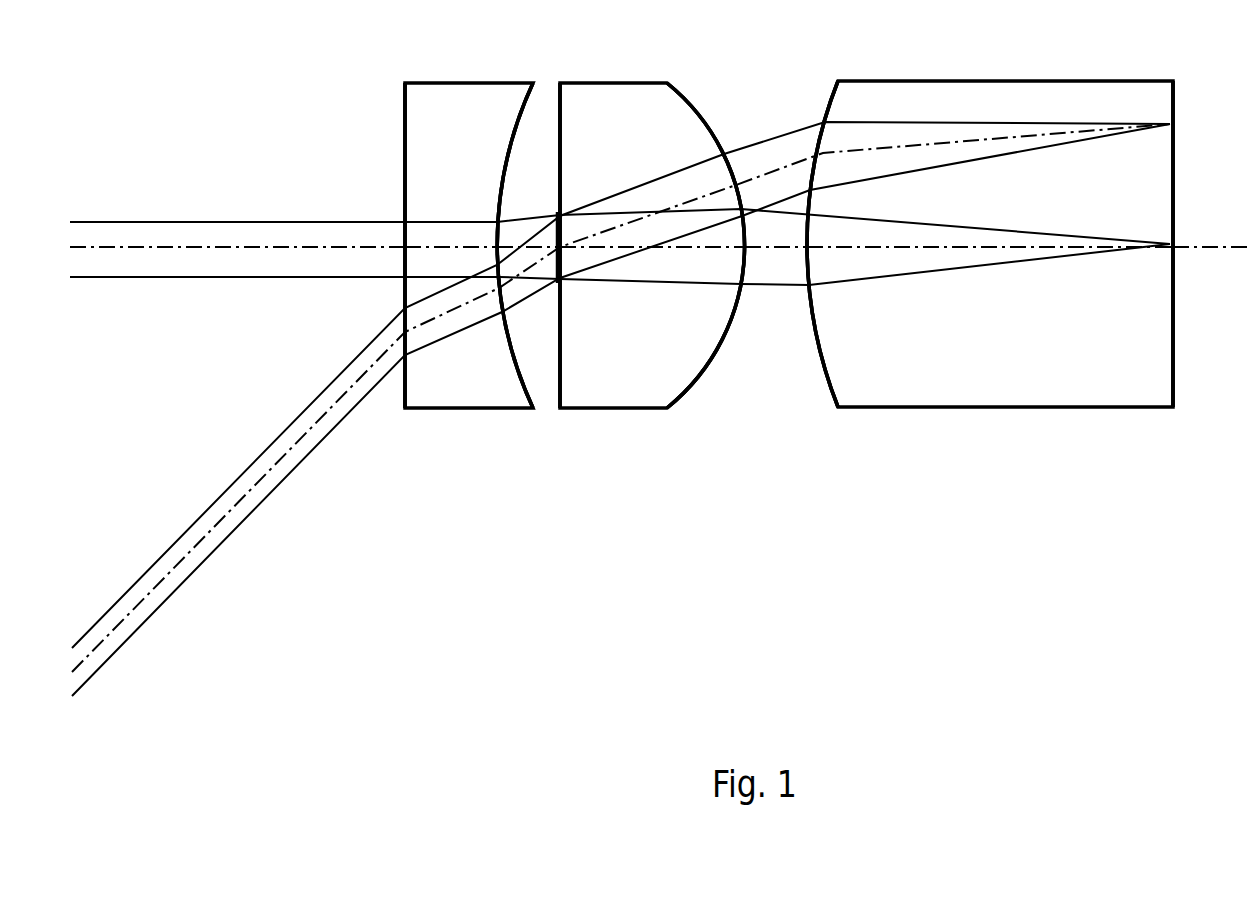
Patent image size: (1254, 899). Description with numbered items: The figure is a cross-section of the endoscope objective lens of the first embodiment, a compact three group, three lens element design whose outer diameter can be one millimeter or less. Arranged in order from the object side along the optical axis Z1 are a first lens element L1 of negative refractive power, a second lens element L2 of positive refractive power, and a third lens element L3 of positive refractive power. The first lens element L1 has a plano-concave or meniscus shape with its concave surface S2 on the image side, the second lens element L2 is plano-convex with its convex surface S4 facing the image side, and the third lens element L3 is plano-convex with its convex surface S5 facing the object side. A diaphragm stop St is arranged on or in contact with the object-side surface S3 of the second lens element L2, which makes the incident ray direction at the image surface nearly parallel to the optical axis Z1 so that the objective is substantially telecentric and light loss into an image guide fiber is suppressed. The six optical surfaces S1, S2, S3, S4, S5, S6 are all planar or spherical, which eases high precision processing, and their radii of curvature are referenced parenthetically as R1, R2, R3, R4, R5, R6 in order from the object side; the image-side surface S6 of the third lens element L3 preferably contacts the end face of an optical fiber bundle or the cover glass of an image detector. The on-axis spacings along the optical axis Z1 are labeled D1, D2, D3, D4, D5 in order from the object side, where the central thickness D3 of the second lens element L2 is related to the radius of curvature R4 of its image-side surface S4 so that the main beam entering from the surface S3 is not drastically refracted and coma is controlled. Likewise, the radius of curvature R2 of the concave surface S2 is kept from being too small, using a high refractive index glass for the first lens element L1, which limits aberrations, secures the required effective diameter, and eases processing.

The first lens element L1 is at (460, 100).
The second lens element L2 is at (618, 97).
The third lens element L3 is at (963, 97).
The diaphragm stop St is at (548, 222).
The object-side surface of the first lens element S1 is at (398, 398).
The image-side surface of the first lens element S2 is at (544, 378).
The object-side surface of the second lens element S3 is at (550, 400).
The image-side surface of the second lens element S4 is at (690, 385).
The object-side surface of the third lens element S5 is at (828, 380).
The image-side surface of the third lens element S6 is at (1175, 382).
The radius of curvature of surface S1 R1 is at (392, 305).
The radius of curvature of surface S2 R2 is at (528, 305).
The radius of curvature of surface S3 R3 is at (593, 320).
The radius of curvature of surface S4 R4 is at (706, 305).
The radius of curvature of surface S5 R5 is at (825, 304).
The radius of curvature of surface S6 R6 is at (1190, 304).
The on-axis surface spacing D1 is at (452, 222).
The on-axis surface spacing D2 is at (548, 268).
The central thickness of the second lens element D3 is at (695, 242).
The on-axis surface spacing D4 is at (777, 250).
The on-axis surface spacing D5 is at (930, 250).
The optical axis Z1 is at (1237, 250).